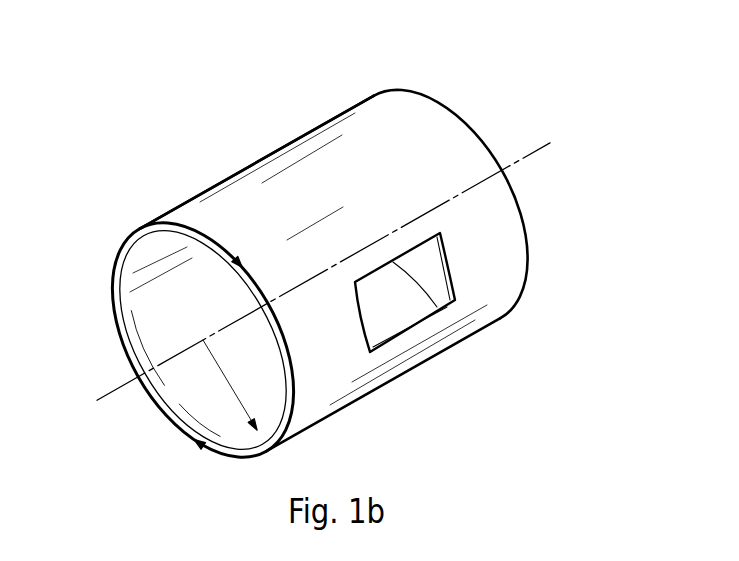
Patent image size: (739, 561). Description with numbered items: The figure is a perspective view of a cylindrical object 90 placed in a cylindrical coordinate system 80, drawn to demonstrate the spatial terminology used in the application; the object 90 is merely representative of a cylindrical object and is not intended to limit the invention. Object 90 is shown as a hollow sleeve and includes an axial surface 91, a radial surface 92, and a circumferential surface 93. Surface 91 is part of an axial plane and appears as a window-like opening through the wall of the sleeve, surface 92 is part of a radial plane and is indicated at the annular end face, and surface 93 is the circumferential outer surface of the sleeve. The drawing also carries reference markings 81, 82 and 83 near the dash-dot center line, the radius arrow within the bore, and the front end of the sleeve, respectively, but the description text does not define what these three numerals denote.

The cylindrical coordinate system 80 is at (286, 257).
The longitudinal axis 81 is at (105, 398).
The inner bore radius 82 is at (237, 392).
The front end face 83 is at (125, 250).
The object 90 is at (350, 93).
The axial surface 91 is at (430, 316).
The radial surface 92 is at (219, 448).
The circumferential surface 93 is at (299, 178).